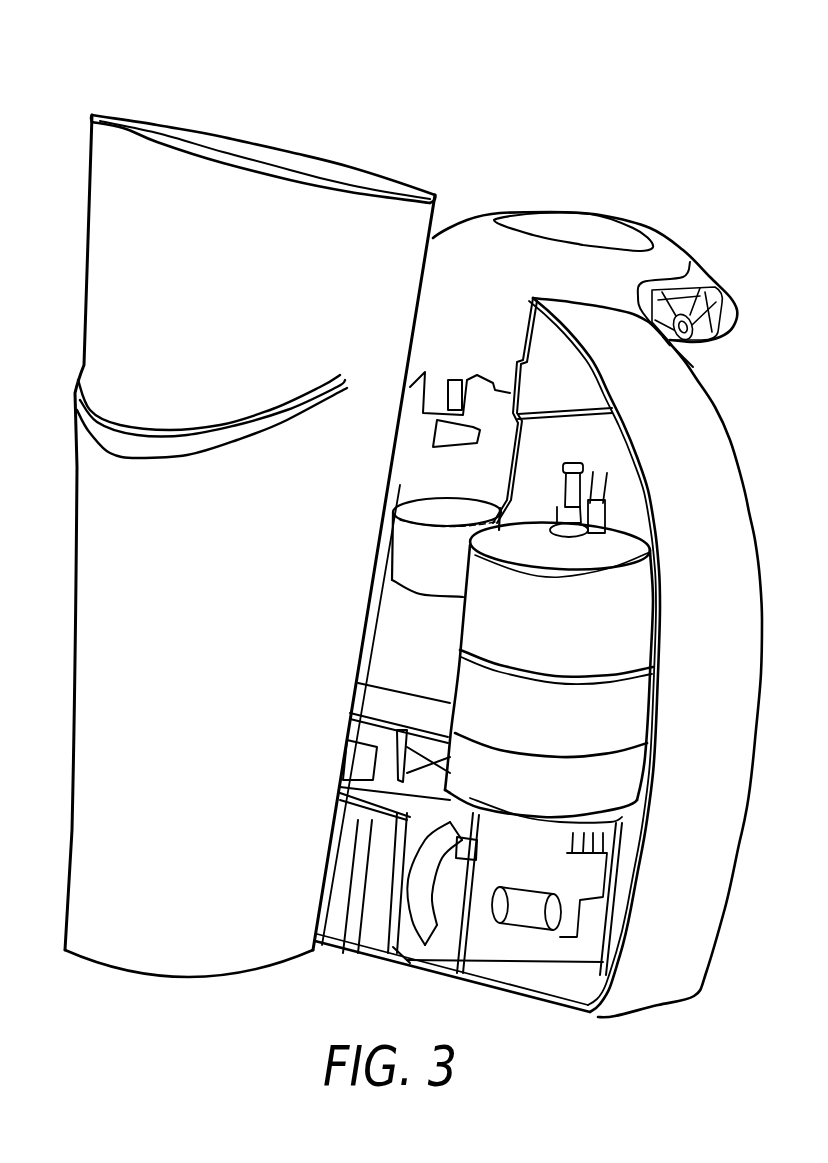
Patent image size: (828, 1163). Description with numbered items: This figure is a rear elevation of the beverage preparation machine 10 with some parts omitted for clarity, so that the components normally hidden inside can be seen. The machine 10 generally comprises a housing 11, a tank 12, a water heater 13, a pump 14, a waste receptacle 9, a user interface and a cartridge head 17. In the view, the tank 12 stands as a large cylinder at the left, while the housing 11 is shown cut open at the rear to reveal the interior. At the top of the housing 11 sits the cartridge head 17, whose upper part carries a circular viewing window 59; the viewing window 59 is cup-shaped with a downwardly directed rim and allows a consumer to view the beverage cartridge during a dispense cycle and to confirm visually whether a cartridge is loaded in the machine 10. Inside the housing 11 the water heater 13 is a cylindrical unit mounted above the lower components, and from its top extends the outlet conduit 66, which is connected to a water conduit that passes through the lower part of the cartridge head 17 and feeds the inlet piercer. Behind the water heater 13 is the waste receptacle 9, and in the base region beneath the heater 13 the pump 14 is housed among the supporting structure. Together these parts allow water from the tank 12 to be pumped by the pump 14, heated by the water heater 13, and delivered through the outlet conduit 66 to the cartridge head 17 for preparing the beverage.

The beverage preparation machine 10 is at (118, 76).
The housing 11 is at (779, 496).
The tank 12 is at (84, 703).
The water heater 13 is at (638, 602).
The pump 14 is at (328, 917).
The cartridge head 17 is at (718, 216).
The viewing window 59 is at (578, 223).
The outlet conduit 66 is at (570, 462).
The waste receptacle 9 is at (433, 582).